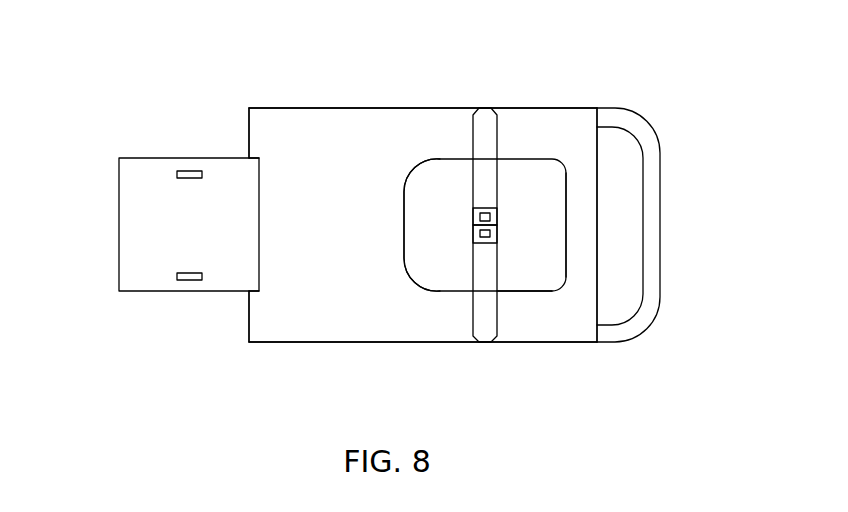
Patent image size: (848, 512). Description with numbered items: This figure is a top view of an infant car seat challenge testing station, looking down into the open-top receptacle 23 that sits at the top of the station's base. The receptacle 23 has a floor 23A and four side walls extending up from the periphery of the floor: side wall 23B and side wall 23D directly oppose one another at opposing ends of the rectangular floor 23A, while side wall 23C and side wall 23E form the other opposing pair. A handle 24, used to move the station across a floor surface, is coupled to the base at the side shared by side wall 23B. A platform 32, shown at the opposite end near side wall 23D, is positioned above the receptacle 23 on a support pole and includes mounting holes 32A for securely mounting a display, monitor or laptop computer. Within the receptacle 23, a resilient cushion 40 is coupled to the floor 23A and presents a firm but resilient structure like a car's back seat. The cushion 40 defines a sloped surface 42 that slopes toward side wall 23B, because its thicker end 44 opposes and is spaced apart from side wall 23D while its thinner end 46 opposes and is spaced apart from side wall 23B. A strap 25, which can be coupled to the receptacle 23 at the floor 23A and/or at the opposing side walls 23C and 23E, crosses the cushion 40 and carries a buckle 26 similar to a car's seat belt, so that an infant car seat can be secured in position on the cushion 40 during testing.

The open-top receptacle 23 is at (315, 343).
The floor 23A is at (312, 203).
The side wall 23B is at (597, 205).
The side wall 23C is at (378, 108).
The side wall 23D is at (248, 317).
The side wall 23E is at (432, 344).
The handle 24 is at (637, 125).
The strap 25 is at (485, 140).
The buckle 26 is at (475, 226).
The platform 32 is at (140, 158).
The holes 32A is at (177, 278).
The resilient cushion 40 is at (527, 293).
The sloped surface 42 is at (543, 195).
The thicker end 44 is at (403, 213).
The thinner end 46 is at (566, 260).